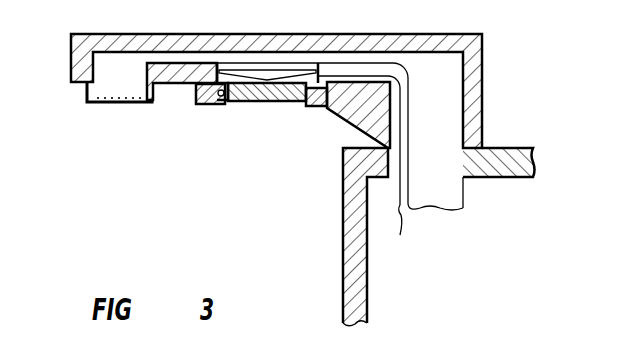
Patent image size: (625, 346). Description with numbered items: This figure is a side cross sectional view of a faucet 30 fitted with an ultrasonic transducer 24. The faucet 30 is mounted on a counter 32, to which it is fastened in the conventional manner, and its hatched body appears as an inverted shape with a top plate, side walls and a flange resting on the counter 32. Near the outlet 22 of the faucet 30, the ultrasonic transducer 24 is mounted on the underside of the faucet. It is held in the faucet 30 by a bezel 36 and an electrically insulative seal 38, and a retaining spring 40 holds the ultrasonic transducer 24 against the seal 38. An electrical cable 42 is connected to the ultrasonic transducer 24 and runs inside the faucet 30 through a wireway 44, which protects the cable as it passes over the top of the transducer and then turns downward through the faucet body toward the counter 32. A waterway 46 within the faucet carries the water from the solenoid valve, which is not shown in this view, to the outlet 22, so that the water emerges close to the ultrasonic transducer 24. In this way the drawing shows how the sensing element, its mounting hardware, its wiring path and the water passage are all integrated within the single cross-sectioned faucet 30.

The outlet 22 is at (112, 108).
The ultrasonic transducer 24 is at (278, 102).
The faucet 30 is at (469, 35).
The counter 32 is at (522, 148).
The bezel 36 is at (207, 109).
The electrically insulative seal 38 is at (232, 98).
The retaining spring 40 is at (250, 70).
The electrical cable 42 is at (402, 212).
The wireway 44 is at (402, 74).
The waterway 46 is at (457, 187).